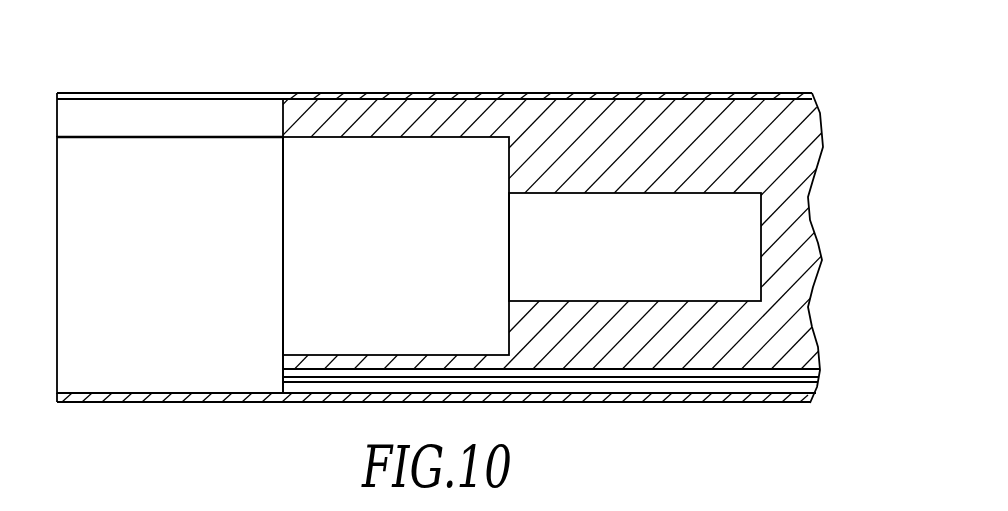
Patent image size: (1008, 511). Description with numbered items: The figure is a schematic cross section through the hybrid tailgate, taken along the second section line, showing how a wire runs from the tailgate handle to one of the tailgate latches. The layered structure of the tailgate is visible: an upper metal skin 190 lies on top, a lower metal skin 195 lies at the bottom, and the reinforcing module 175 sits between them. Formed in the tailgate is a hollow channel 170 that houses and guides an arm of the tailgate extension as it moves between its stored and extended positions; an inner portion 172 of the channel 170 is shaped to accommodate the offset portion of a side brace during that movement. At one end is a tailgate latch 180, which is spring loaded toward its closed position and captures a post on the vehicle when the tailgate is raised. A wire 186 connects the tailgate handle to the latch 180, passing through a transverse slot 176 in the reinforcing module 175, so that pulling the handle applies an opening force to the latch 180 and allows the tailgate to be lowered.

The channel 170 is at (384, 256).
The inner portion of channel 172 is at (642, 257).
The reinforcing module 175 is at (733, 117).
The transverse slot 176 is at (718, 387).
The tailgate latch 180 is at (164, 264).
The wire 186 is at (575, 381).
The upper metal skin 190 is at (483, 93).
The lower metal skin 195 is at (210, 403).